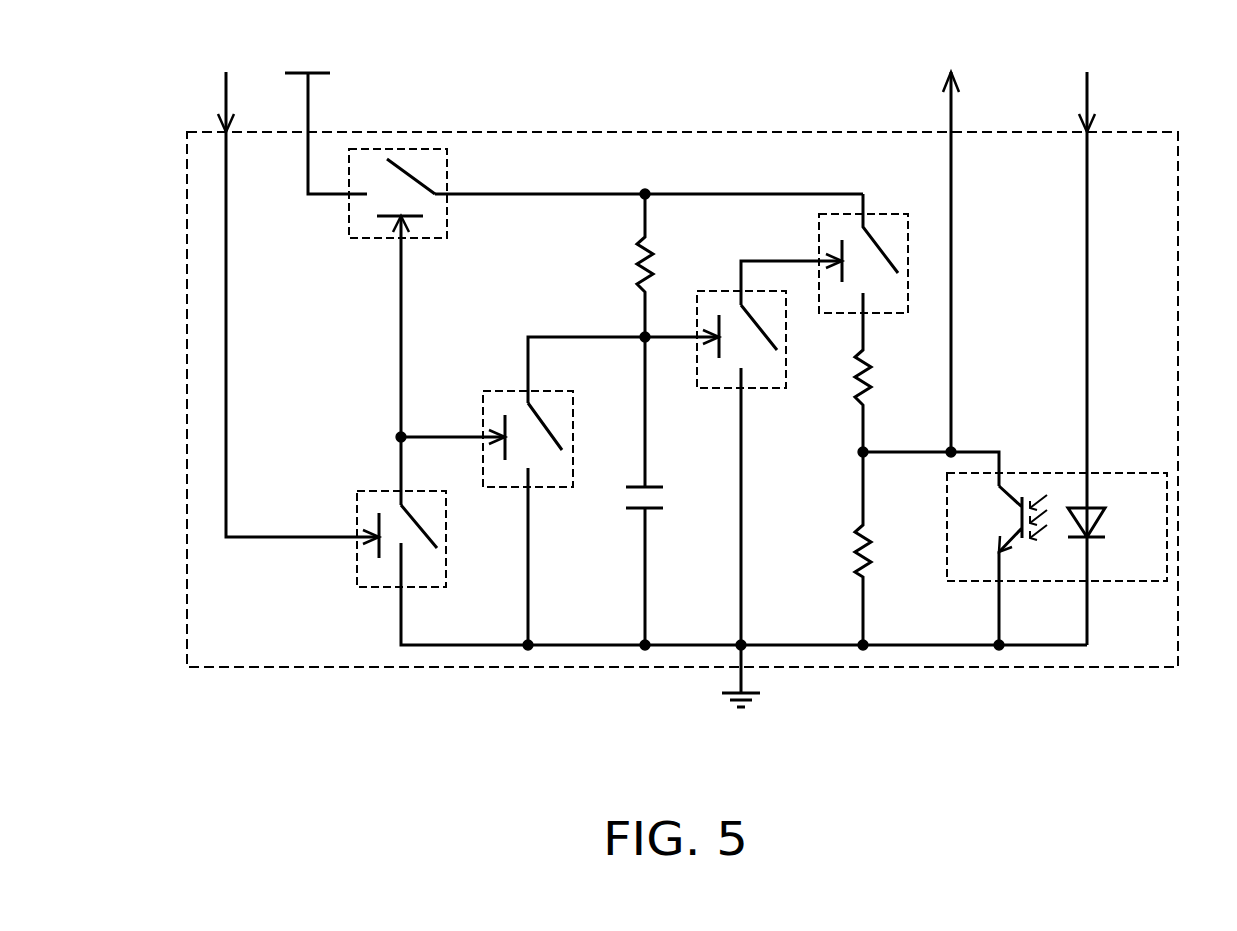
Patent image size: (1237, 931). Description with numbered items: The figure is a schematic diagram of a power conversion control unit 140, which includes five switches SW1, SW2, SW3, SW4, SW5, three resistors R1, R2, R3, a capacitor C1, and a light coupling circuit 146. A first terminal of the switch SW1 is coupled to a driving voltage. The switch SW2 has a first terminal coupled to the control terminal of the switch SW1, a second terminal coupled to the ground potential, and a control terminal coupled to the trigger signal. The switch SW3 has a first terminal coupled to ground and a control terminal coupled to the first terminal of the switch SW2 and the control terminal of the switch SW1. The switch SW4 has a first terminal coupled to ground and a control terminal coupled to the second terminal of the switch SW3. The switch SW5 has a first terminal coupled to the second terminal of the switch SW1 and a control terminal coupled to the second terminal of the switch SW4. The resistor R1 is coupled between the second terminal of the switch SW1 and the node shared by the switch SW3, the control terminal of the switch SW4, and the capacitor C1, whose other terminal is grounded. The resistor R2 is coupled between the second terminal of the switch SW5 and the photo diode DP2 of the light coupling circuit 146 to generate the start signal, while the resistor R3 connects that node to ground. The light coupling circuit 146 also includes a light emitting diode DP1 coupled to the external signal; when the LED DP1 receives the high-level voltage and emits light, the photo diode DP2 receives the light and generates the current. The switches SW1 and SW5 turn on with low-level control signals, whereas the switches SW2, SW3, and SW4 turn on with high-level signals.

The power conversion control unit 140 is at (1178, 353).
The light coupling circuit 146 is at (1139, 470).
The switch SW1 is at (418, 240).
The switch SW2 is at (418, 589).
The switch SW3 is at (545, 489).
The switch SW4 is at (760, 390).
The switch SW5 is at (880, 214).
The resistor R1 is at (664, 265).
The resistor R2 is at (882, 382).
The resistor R3 is at (882, 548).
The capacitor C1 is at (664, 491).
The light emitting diode DP1 is at (1114, 521).
The photo diode DP2 is at (1001, 533).